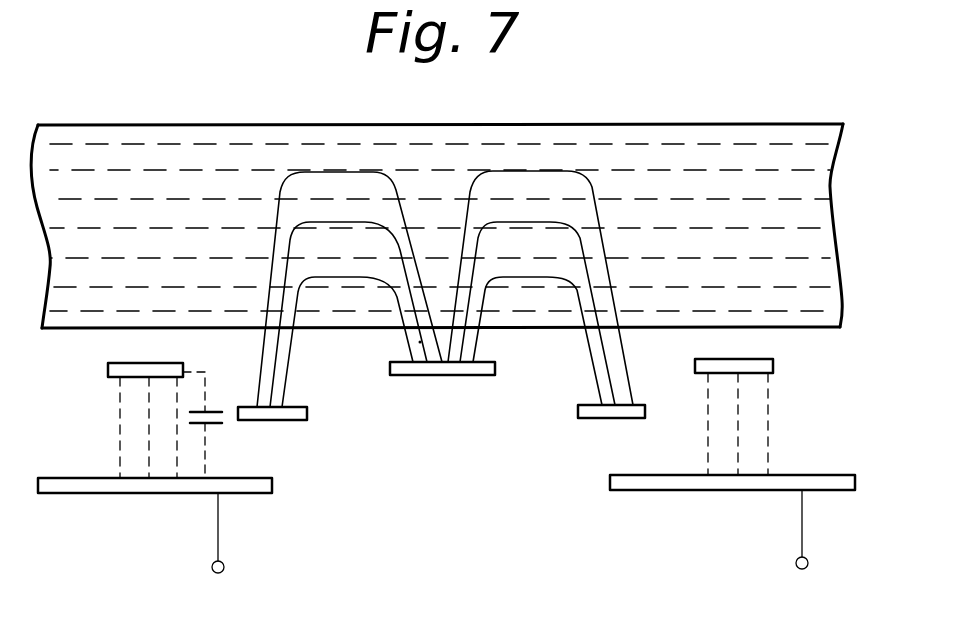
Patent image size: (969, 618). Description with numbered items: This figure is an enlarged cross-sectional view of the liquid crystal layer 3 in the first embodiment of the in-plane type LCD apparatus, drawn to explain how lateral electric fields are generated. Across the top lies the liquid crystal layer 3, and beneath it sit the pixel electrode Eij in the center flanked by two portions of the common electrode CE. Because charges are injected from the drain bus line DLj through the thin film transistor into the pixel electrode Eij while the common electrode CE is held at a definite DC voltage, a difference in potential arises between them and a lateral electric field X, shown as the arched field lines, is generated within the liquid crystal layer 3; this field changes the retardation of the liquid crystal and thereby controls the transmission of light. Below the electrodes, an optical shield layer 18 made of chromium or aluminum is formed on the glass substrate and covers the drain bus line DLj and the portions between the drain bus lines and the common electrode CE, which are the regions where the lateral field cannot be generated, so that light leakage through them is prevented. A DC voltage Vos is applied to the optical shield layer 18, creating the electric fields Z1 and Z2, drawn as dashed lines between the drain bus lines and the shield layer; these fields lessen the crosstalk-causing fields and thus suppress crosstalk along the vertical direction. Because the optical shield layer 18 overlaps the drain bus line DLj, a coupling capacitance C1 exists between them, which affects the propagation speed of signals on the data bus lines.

The liquid crystal layer 3 is at (798, 188).
The lateral electric field X is at (487, 175).
The pixel electrode Eij is at (453, 375).
The common electrode CE is at (283, 420).
The drain bus line DLj is at (108, 368).
The electric field Z1 is at (120, 442).
The electric field Z2 is at (768, 435).
The coupling capacitance C1 is at (217, 407).
The optical shield layer 18 is at (258, 483).
The DC voltage Vos is at (519, 549).